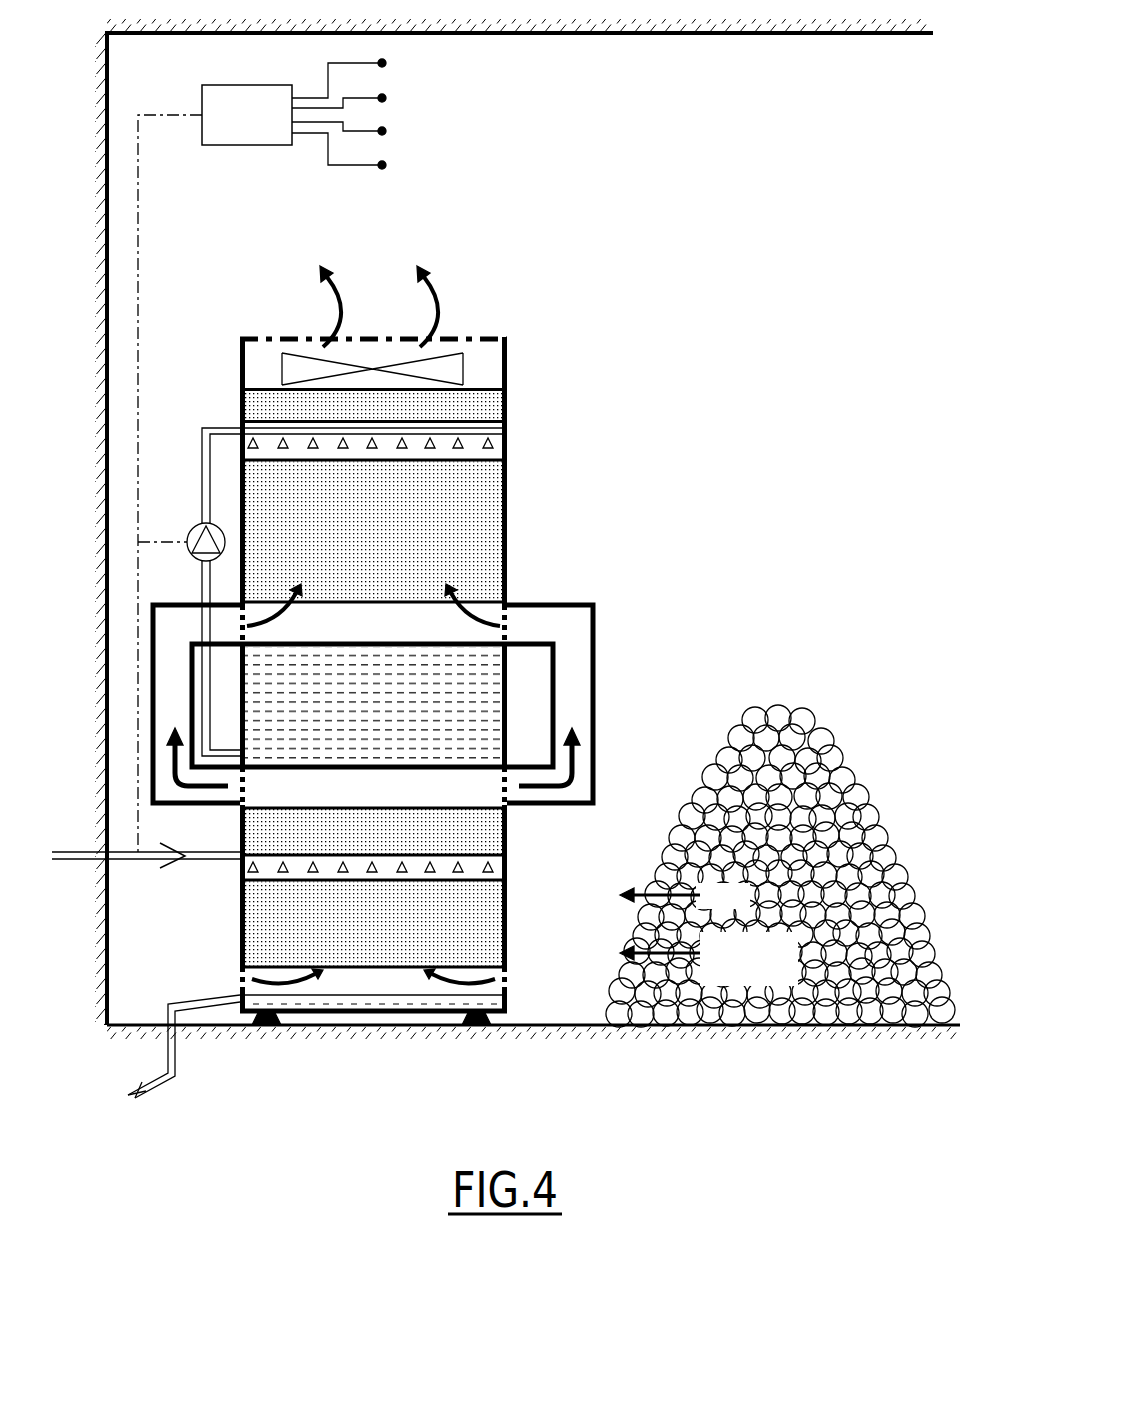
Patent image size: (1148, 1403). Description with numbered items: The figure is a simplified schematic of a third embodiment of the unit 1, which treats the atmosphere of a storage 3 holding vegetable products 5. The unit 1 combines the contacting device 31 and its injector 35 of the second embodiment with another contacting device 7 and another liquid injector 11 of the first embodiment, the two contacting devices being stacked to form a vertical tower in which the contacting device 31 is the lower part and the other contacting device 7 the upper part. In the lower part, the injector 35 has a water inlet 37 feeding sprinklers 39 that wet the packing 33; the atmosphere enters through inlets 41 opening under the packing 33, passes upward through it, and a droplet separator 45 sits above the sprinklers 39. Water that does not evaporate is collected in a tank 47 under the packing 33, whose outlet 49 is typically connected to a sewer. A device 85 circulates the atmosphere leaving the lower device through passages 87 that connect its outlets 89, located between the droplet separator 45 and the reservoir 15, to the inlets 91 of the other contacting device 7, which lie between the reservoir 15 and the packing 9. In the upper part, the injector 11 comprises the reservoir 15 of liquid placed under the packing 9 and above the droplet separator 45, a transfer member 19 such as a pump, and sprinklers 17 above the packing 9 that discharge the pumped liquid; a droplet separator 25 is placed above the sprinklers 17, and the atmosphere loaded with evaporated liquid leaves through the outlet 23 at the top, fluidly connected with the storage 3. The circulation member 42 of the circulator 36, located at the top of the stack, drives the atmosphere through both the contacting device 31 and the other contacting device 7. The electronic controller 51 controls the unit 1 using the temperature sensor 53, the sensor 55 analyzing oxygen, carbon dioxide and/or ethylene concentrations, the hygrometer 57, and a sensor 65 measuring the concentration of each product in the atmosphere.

The unit 1 is at (575, 362).
The storage 3 is at (722, 36).
The vegetable products 5 is at (820, 765).
The contacting device 7 is at (437, 531).
The packing 9 is at (505, 485).
The device for injecting the liquid flow 11 is at (322, 570).
The reservoir 15 is at (507, 705).
The sprinklers 17 is at (273, 430).
The transfer member 19 is at (196, 560).
The outlet 23 is at (293, 335).
The droplet separator 25 is at (505, 405).
The contacting device 31 is at (430, 908).
The packing 33 is at (497, 910).
The device for injecting the liquid flow 35 is at (122, 820).
The device for circulating the atmosphere 36 is at (484, 310).
The water inlet 37 is at (72, 860).
The sprinklers 39 is at (273, 855).
The inlets 41 is at (240, 975).
The circulation member 42 is at (505, 358).
The droplet separator 45 is at (497, 835).
The tank 47 is at (507, 998).
The outlet 49 is at (240, 998).
The electronic controller 51 is at (247, 115).
The temperature sensor 53 is at (386, 63).
The sensor 55 is at (386, 98).
The hygrometer 57 is at (386, 131).
The sensor 65 is at (386, 165).
The device 85 is at (640, 622).
The passages 87 is at (150, 690).
The outlets 89 is at (247, 785).
The inlets 91 is at (247, 632).